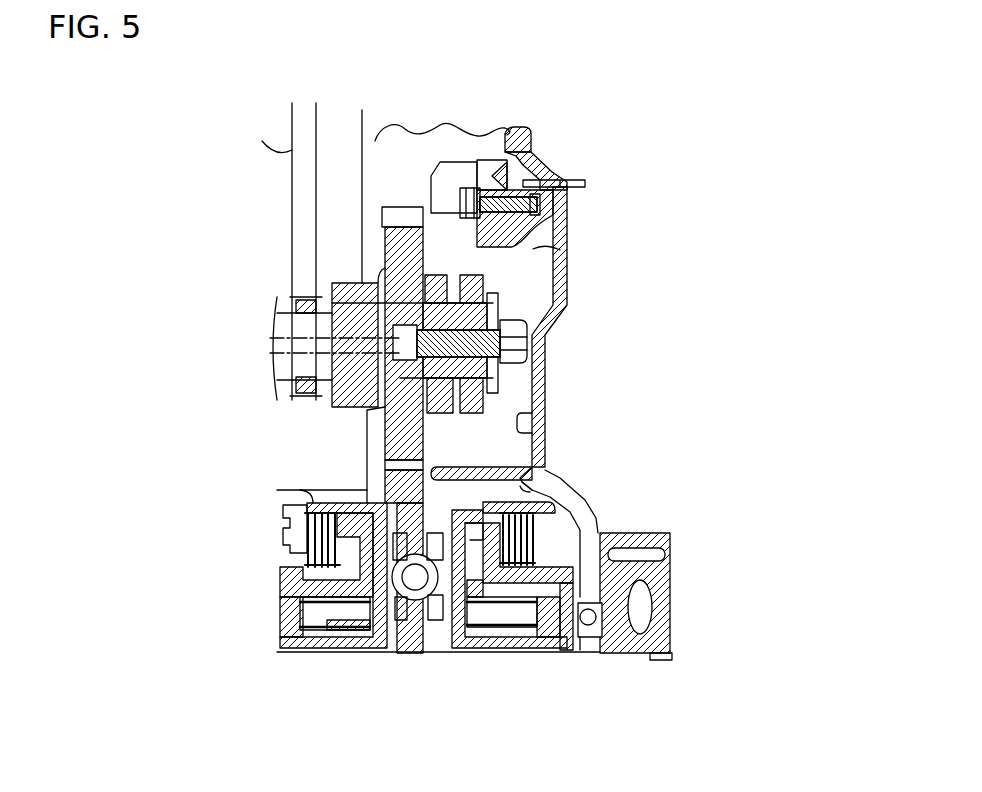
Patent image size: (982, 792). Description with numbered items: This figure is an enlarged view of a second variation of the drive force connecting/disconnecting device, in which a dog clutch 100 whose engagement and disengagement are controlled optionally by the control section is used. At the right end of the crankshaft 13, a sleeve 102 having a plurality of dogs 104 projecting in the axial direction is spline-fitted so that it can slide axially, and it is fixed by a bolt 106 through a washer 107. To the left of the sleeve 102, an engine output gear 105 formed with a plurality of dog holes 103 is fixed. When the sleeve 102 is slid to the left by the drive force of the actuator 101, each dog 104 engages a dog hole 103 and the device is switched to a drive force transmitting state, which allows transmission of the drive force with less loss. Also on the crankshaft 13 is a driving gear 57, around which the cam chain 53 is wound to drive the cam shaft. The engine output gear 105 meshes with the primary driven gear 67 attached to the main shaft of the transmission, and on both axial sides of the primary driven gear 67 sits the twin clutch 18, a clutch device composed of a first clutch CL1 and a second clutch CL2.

The crankshaft 13 is at (281, 303).
The twin clutch 18 is at (563, 513).
The cam chain 53 is at (293, 147).
The driving gear 57 is at (303, 298).
The primary driven gear 67 is at (366, 497).
The dog clutch 100 is at (496, 246).
The actuator 101 is at (488, 279).
The sleeve 102 is at (458, 417).
The dog hole 103 is at (408, 283).
The dog 104 is at (432, 415).
The engine output gear 105 is at (403, 233).
The bolt 106 is at (548, 342).
The washer 107 is at (498, 390).
The first clutch CL1 is at (556, 539).
The second clutch CL2 is at (272, 545).